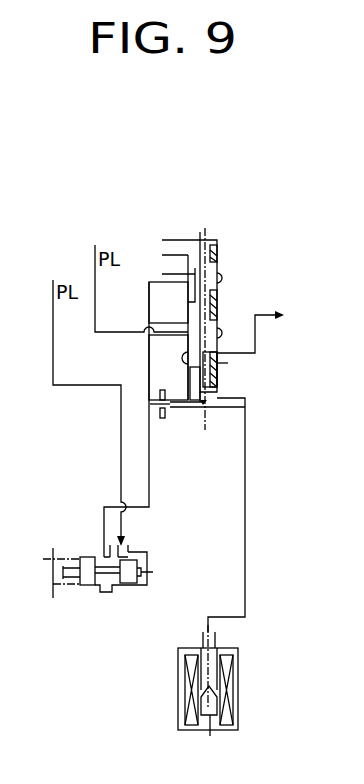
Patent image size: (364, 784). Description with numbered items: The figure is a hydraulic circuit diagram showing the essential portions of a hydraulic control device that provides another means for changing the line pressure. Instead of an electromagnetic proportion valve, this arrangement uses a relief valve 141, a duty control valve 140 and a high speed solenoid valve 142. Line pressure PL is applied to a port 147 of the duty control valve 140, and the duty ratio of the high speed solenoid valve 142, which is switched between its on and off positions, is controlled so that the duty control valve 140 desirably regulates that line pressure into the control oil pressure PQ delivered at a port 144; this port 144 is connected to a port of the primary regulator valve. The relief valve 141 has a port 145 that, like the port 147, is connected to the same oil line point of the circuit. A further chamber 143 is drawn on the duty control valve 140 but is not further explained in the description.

The duty control valve 140 is at (238, 255).
The relief valve 141 is at (80, 604).
The high speed solenoid valve 142 is at (248, 693).
The pressure chamber 143 is at (173, 279).
The port 144 is at (228, 363).
The port 145 is at (127, 536).
The port 147 is at (165, 339).